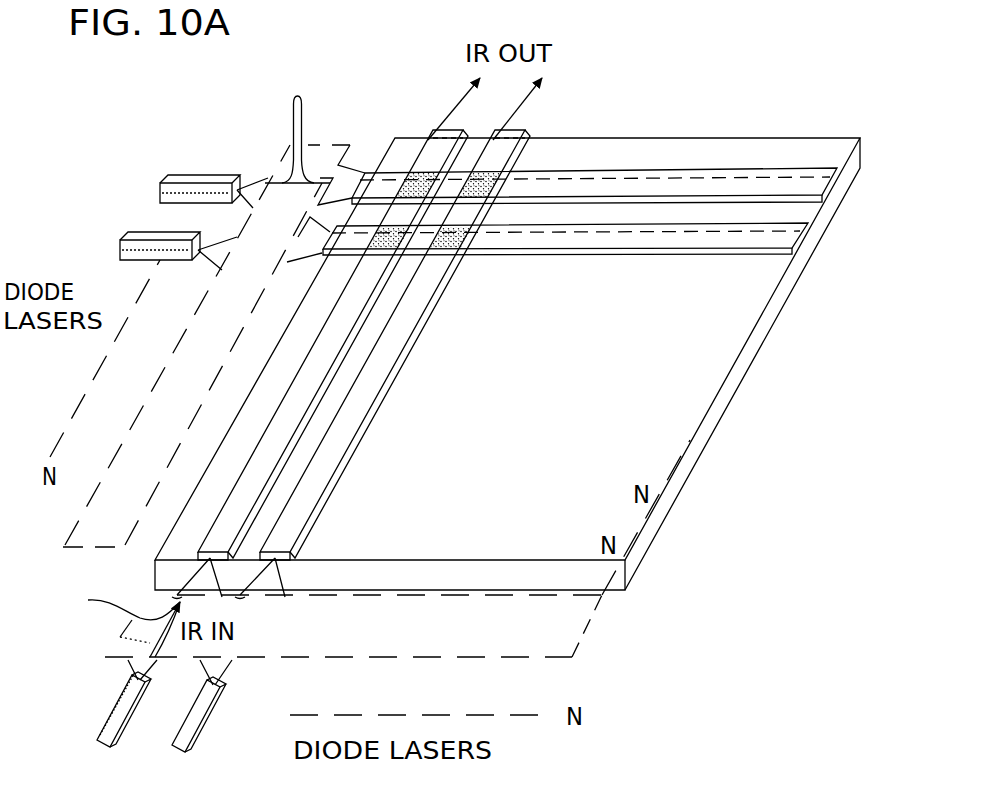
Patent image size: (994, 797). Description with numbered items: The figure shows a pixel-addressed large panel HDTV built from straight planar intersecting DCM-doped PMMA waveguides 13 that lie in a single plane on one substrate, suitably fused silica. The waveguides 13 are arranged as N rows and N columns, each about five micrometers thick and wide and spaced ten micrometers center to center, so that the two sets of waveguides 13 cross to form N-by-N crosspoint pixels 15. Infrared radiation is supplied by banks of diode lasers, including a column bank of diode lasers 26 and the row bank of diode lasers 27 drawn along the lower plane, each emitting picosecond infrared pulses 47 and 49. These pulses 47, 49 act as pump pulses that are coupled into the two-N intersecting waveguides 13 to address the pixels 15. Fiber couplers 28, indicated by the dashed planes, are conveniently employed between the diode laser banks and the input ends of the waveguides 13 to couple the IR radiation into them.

The waveguide 13 is at (760, 167).
The crosspoint pixel 15 is at (453, 175).
The diode laser bank 26 is at (205, 172).
The diode laser 27 is at (130, 738).
The fiber coupler 28 is at (88, 496).
The picosecond infrared pulse 47 is at (95, 602).
The picosecond infrared pulse 49 is at (306, 120).